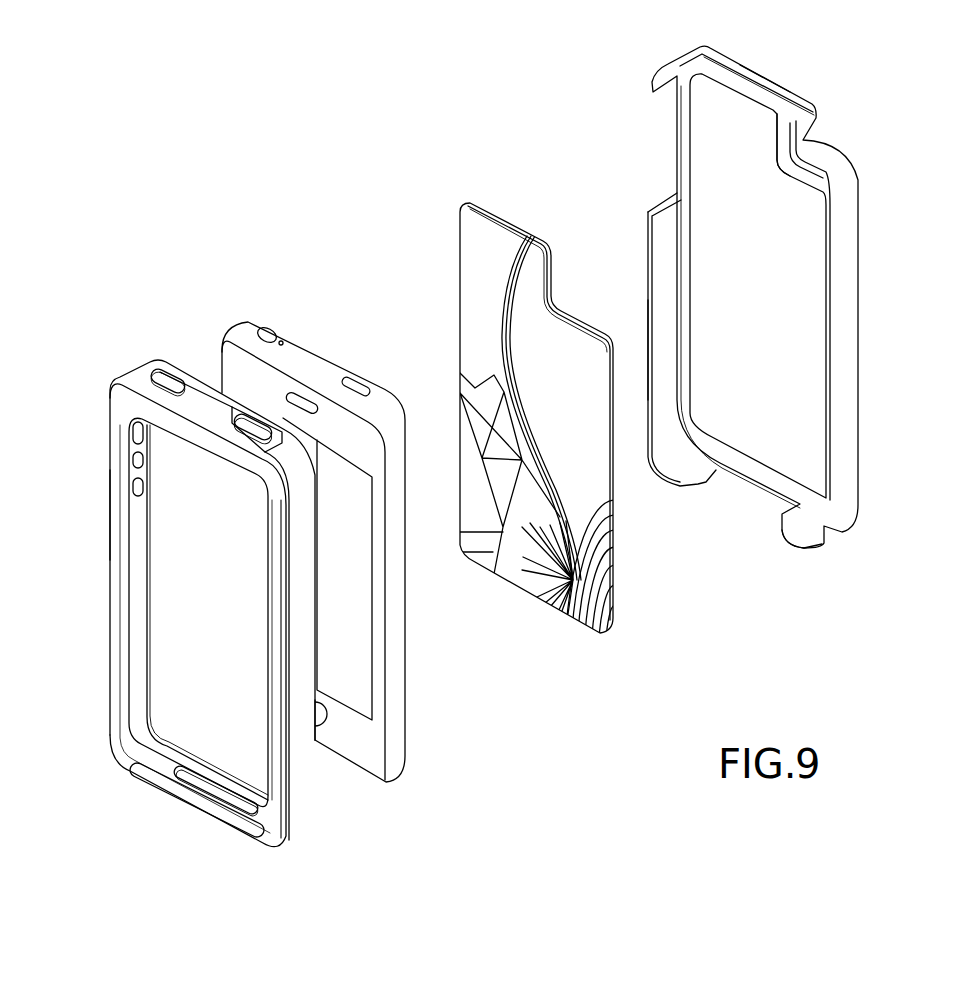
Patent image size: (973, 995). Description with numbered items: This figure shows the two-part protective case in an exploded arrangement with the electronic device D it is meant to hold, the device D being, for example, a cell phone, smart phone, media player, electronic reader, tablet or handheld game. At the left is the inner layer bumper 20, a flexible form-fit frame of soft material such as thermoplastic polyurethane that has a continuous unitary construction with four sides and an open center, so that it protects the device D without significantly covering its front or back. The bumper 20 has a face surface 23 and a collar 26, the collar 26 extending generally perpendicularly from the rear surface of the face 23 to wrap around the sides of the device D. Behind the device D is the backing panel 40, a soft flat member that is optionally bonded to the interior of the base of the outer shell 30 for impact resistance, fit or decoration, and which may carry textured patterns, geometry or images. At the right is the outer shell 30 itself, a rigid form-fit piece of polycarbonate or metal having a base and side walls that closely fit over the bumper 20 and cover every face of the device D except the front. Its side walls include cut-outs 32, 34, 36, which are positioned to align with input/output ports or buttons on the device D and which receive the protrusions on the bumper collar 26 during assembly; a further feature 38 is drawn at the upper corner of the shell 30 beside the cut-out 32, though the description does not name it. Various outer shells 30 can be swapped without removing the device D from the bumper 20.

The inner layer bumper 20 is at (304, 816).
The face surface 23 is at (116, 521).
The collar 26 is at (311, 786).
The electronic device D is at (399, 654).
The backing panel 40 is at (471, 270).
The outer shell 30 is at (849, 347).
The cut-out 32 is at (784, 83).
The cut-out 34 is at (662, 151).
The cut-out 36 is at (745, 506).
The notch 38 is at (802, 133).